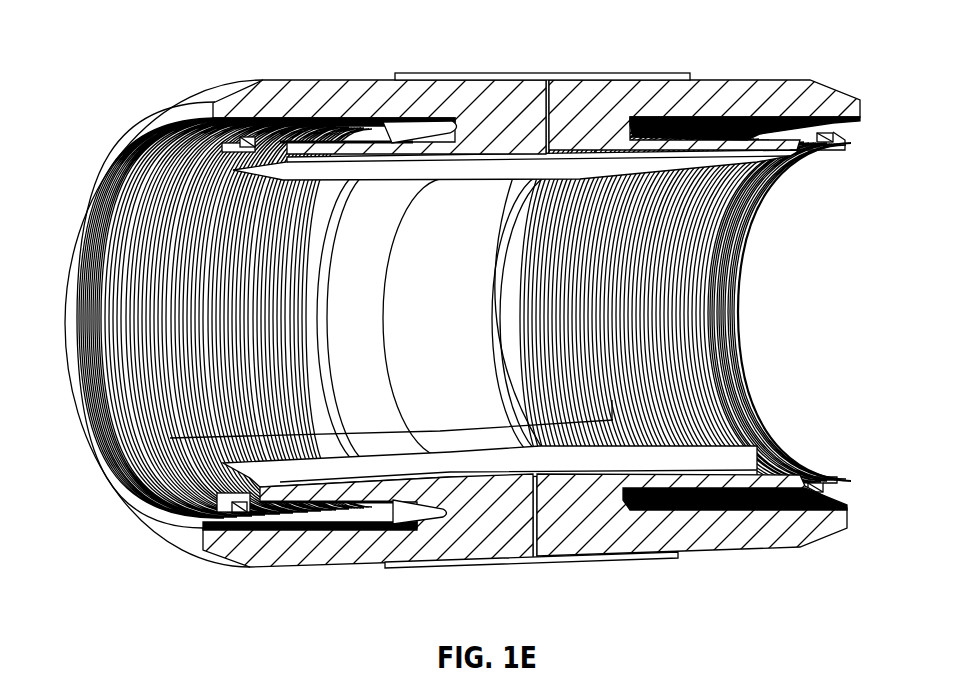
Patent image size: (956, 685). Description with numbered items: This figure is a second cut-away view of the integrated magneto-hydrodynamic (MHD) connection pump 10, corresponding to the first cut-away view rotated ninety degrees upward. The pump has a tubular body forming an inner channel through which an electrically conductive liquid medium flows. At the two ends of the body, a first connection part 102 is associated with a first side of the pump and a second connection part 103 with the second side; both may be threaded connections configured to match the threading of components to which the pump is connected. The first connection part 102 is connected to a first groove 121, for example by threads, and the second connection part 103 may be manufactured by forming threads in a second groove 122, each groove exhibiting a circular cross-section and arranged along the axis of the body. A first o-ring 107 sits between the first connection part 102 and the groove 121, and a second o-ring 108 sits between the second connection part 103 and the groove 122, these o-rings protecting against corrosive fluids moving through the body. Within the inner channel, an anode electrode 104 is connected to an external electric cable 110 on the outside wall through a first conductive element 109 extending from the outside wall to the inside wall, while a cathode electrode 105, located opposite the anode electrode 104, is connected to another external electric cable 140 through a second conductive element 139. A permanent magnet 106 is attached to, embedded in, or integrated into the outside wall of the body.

The integrated magneto-hydrodynamic (MHD) connection pump 10 is at (134, 35).
The first connection part 102 is at (313, 80).
The second connection part 103 is at (700, 115).
The anode electrode 104 is at (777, 450).
The cathode electrode 105 is at (372, 112).
The permanent magnet 106 is at (150, 300).
The first o-ring 107 is at (137, 498).
The second o-ring 108 is at (737, 420).
The first conductive element 109 is at (520, 560).
The external electric cable 110 is at (633, 557).
The first groove 121 is at (235, 117).
The second groove 122 is at (833, 128).
The second conductive element 139 is at (553, 107).
The external electric cable 140 is at (492, 74).